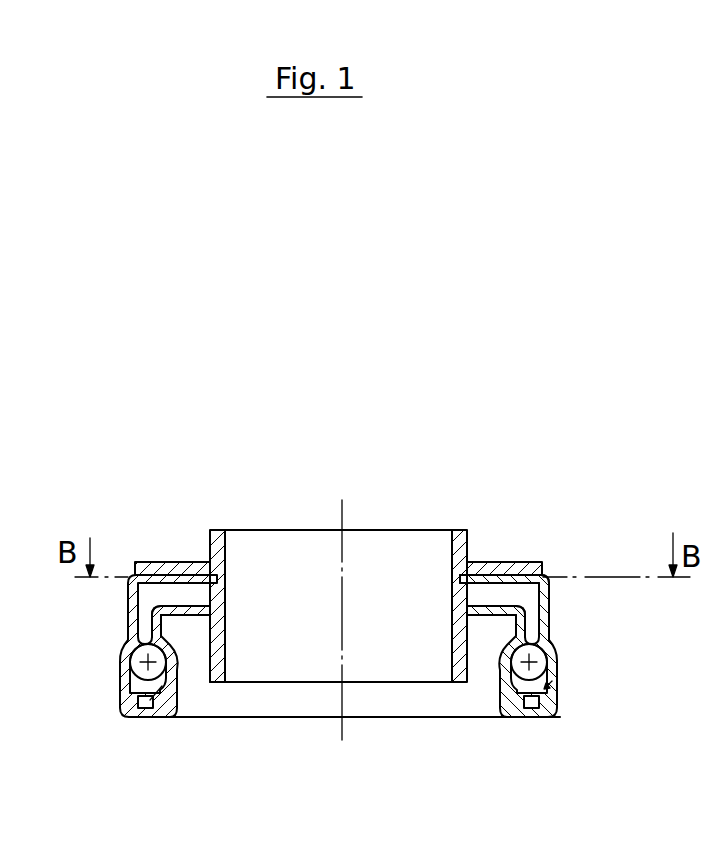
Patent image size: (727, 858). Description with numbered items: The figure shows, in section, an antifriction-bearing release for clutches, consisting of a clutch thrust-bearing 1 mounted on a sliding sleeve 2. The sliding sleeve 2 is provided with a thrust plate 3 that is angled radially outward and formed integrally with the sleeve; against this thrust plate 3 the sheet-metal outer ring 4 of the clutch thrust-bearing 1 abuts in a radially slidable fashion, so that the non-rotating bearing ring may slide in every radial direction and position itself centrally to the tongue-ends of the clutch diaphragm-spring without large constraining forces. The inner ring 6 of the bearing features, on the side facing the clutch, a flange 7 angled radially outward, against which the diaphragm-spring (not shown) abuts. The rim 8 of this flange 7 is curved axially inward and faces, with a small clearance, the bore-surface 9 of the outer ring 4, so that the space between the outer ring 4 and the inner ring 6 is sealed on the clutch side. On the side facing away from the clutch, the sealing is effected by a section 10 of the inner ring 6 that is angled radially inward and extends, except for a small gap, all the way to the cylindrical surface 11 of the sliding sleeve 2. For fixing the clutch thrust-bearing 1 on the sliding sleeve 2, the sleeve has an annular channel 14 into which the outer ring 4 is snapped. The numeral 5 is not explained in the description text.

The clutch thrust-bearing 1 is at (565, 591).
The sliding sleeve 2 is at (456, 695).
The thrust plate 3 is at (490, 573).
The sheet-metal outer ring 4 is at (552, 662).
The inner sheet metal part 5 is at (515, 573).
The inner ring 6 is at (140, 700).
The flange 7 is at (147, 717).
The rim 8 is at (133, 705).
The bore-surface 9 is at (553, 703).
The section 10 is at (165, 605).
The cylindrical surface 11 is at (198, 670).
The annular channel 14 is at (465, 588).